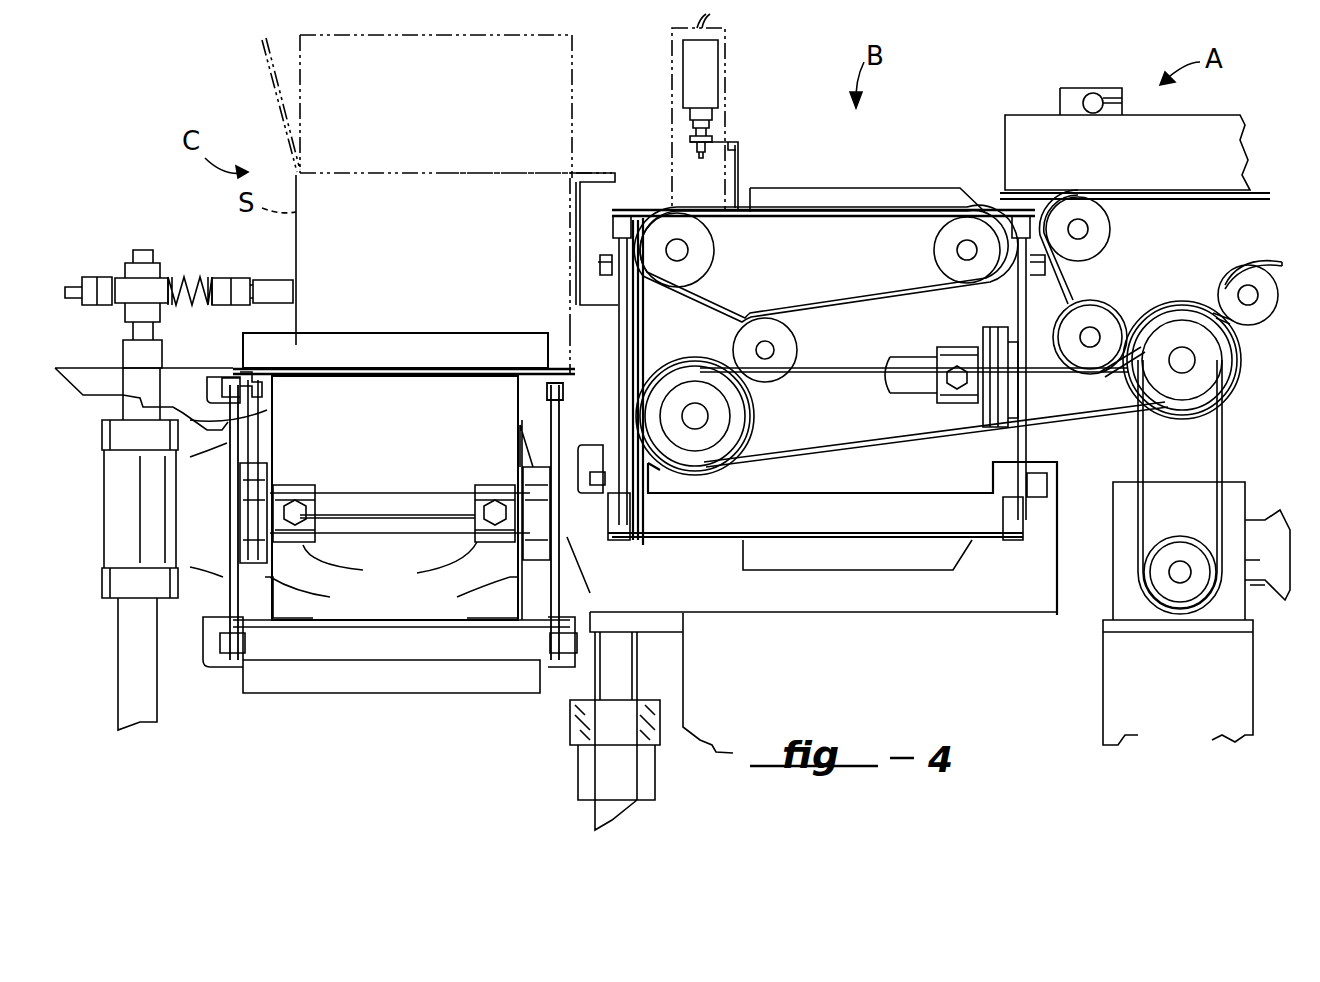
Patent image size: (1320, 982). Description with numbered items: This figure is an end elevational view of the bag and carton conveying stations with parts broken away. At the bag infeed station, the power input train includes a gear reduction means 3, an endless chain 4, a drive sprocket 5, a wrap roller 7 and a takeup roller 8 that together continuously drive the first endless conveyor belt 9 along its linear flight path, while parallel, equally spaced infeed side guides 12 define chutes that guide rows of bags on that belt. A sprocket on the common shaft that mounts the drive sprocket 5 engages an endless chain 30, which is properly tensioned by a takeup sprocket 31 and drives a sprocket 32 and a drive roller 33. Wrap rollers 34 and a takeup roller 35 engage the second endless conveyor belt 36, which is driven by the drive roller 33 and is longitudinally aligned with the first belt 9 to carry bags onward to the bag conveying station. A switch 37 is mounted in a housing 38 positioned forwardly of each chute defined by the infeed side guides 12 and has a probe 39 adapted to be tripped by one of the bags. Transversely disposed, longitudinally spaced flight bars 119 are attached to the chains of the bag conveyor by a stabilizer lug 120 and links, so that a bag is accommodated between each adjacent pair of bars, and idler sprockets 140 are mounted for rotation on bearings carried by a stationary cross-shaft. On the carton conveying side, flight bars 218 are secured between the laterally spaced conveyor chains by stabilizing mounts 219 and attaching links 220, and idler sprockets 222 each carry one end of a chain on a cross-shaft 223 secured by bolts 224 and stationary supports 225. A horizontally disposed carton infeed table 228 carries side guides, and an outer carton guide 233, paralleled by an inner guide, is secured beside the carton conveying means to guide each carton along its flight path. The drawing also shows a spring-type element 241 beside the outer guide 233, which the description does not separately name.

The gear reduction means 3 is at (1190, 516).
The endless chain 4 is at (1142, 468).
The drive sprocket 5 is at (1192, 332).
The wrap roller 7 is at (1095, 238).
The takeup roller 8 is at (1240, 278).
The first endless conveyor belt 9 is at (1185, 200).
The infeed side guides 12 is at (1058, 162).
The endless chain 30 is at (880, 445).
The takeup sprocket 31 is at (1085, 362).
The sprocket 32 is at (735, 408).
The drive roller 33 is at (695, 372).
The wrap rollers 34 is at (688, 255).
The takeup roller 35 is at (783, 342).
The second endless conveyor belt 36 is at (830, 310).
The switch 37 is at (708, 70).
The housing 38 is at (728, 115).
The probe 39 is at (740, 175).
The flight bars 119 is at (940, 202).
The stabilizer lug 120 is at (622, 210).
The idler sprockets 140 is at (637, 330).
The flight bars 218 is at (392, 348).
The stabilizing mounts 219 is at (240, 372).
The attaching links 220 is at (250, 385).
The idler sprockets 222 is at (236, 450).
The cross-shaft 223 is at (402, 503).
The bolts 224 is at (495, 490).
The stationary supports 225 is at (417, 573).
The carton infeed table 228 is at (85, 368).
The outer carton guide 233 is at (278, 285).
The spring 241 is at (193, 280).